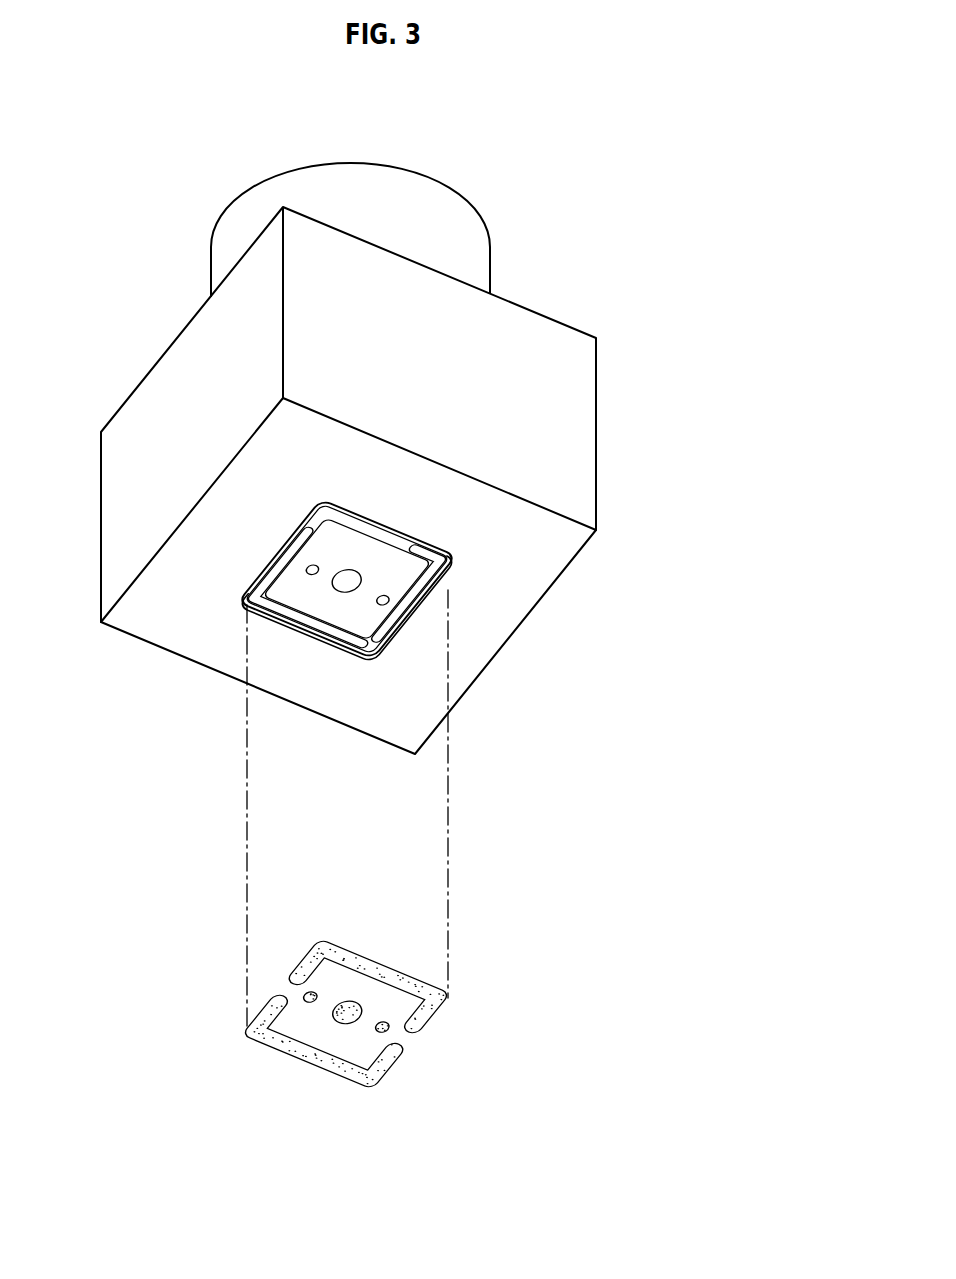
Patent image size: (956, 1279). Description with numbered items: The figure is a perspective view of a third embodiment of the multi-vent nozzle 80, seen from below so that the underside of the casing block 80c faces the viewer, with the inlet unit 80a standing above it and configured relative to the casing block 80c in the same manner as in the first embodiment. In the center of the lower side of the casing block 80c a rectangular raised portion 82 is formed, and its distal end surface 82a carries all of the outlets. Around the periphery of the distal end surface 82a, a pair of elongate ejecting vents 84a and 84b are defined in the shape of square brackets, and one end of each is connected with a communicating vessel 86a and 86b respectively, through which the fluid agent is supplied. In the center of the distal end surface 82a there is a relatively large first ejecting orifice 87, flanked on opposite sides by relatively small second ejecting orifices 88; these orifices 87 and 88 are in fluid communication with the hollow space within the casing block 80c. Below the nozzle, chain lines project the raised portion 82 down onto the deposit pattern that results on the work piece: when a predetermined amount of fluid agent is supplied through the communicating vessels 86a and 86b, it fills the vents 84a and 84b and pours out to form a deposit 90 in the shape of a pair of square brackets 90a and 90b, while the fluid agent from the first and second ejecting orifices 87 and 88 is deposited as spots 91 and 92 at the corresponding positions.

The multi-vent nozzle 80 is at (381, 458).
The inlet unit 80a is at (468, 258).
The casing block 80c is at (116, 522).
The raised portion 82 is at (347, 585).
The distal end surface 82a is at (347, 579).
The elongate ejecting vent 84a is at (330, 632).
The elongate ejecting vent 84b is at (347, 579).
The communicating vessel 86a is at (335, 587).
The communicating vessel 86b is at (395, 593).
The first ejecting orifice 87 is at (346, 581).
The second ejecting orifices 88 is at (347, 584).
The seal member 90 is at (368, 1019).
The square bracket deposit 90a is at (324, 1040).
The square bracket deposit 90b is at (367, 986).
The spot 91 is at (347, 1012).
The spots 92 is at (346, 1012).